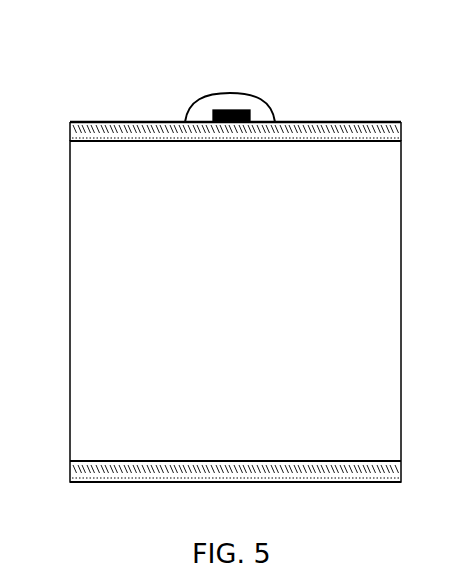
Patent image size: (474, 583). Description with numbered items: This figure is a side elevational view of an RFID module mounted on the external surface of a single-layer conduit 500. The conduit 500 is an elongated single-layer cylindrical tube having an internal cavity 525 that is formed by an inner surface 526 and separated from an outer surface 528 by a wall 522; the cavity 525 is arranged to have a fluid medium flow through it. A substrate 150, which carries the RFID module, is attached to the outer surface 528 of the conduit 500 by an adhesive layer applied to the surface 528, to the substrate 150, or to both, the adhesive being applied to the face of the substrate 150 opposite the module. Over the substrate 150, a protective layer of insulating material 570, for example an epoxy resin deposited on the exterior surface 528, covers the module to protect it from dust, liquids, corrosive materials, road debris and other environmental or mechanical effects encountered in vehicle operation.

The single-layer conduit 500 is at (370, 99).
The substrate 150 is at (232, 110).
The protective layer of insulating material 570 is at (220, 93).
The outer surface 528 is at (122, 121).
The wall 522 is at (197, 133).
The inner surface 526 is at (270, 143).
The internal cavity 525 is at (259, 290).